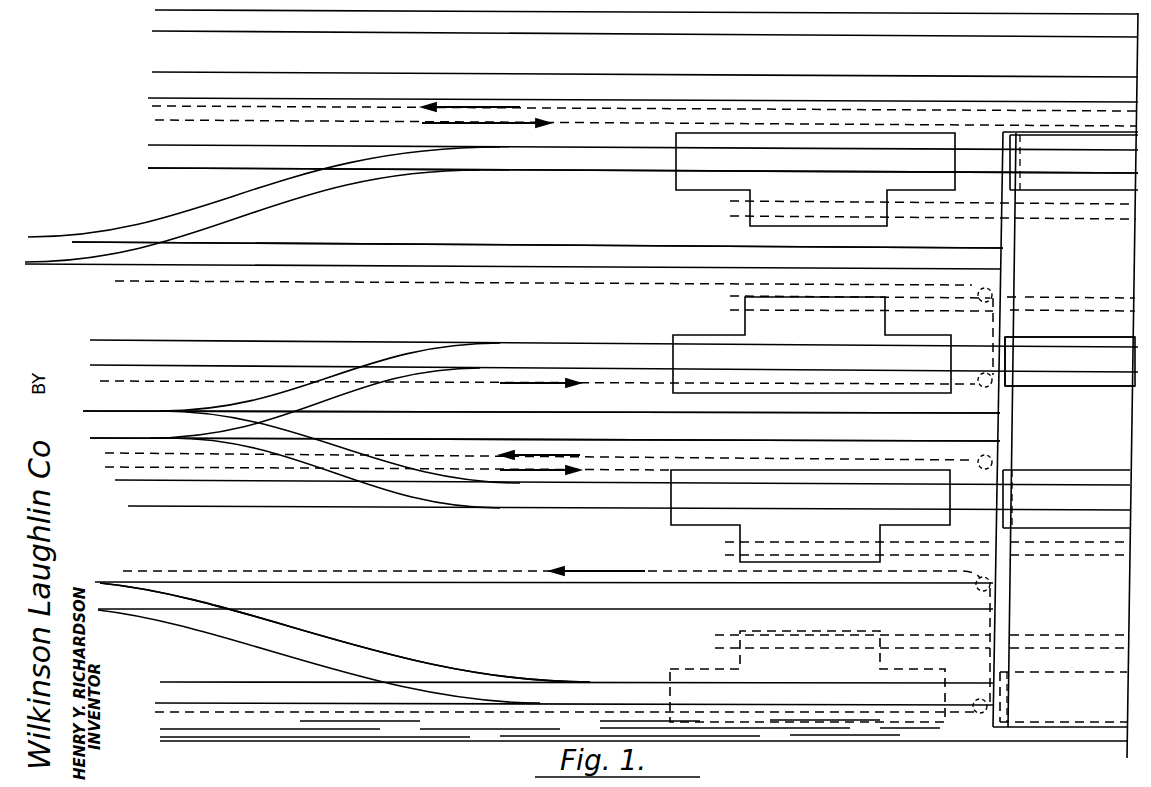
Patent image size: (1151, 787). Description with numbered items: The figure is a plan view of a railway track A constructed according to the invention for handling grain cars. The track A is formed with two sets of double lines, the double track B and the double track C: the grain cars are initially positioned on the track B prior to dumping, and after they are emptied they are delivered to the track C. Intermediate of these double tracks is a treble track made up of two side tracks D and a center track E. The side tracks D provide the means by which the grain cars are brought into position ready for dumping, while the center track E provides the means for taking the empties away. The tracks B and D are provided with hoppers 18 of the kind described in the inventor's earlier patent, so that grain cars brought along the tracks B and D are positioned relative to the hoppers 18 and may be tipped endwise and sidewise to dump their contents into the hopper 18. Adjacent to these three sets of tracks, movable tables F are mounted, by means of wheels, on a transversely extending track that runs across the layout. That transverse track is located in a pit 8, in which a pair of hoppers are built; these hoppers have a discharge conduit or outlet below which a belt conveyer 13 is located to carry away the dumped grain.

The hopper 18 is at (720, 178).
The belt conveyer 13 is at (992, 580).
The pit 8 is at (1065, 429).
The movable table F is at (1062, 388).
The railway track A is at (447, 673).
The double track B is at (635, 172).
The double track C is at (658, 628).
The side track D is at (650, 370).
The center track E is at (685, 412).